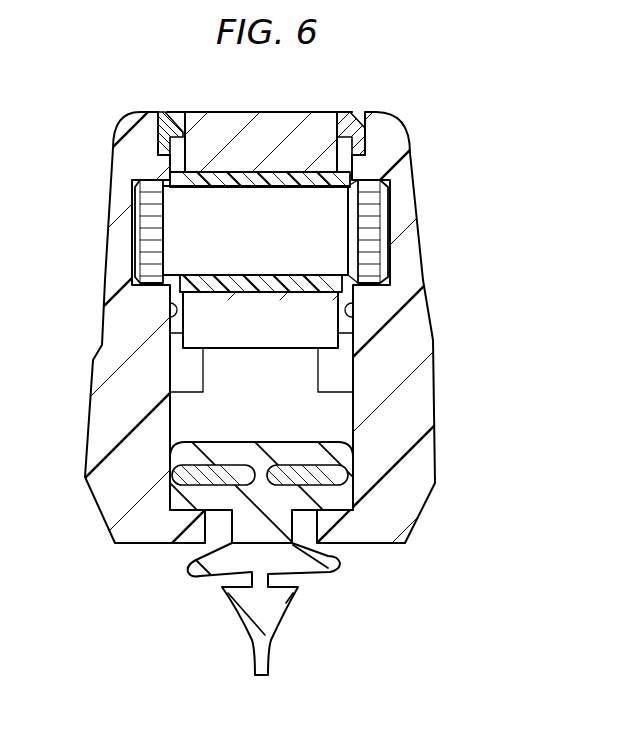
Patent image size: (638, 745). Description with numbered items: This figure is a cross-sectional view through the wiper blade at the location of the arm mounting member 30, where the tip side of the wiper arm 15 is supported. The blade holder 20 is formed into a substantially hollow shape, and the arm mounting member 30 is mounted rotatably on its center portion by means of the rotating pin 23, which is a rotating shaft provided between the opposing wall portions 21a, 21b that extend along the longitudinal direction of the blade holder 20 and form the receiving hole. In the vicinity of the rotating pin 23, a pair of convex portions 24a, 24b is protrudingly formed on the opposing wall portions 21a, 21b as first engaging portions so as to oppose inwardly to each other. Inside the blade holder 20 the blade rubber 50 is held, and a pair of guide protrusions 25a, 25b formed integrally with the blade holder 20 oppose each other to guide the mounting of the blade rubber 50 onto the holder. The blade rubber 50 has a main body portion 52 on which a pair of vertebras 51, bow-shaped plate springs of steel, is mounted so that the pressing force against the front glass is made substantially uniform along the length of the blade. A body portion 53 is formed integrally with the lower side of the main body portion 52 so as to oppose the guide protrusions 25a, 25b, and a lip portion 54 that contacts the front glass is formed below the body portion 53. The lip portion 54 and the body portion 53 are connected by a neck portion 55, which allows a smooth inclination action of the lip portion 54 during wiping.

The wiper arm 15 is at (276, 130).
The arm mounting member 30 is at (354, 130).
The rotating pin 23 is at (390, 242).
The opposing wall portion 21a is at (168, 320).
The opposing wall portion 21b is at (353, 318).
The convex portion 24a is at (180, 362).
The convex portion 24b is at (335, 370).
The blade holder 20 is at (108, 405).
The main body portion 52 is at (353, 453).
The vertebra 51 is at (200, 472).
The guide protrusion 25a is at (193, 529).
The guide protrusion 25b is at (330, 530).
The body portion 53 is at (208, 552).
The neck portion 55 is at (258, 578).
The blade rubber 50 is at (229, 599).
The lip portion 54 is at (262, 648).